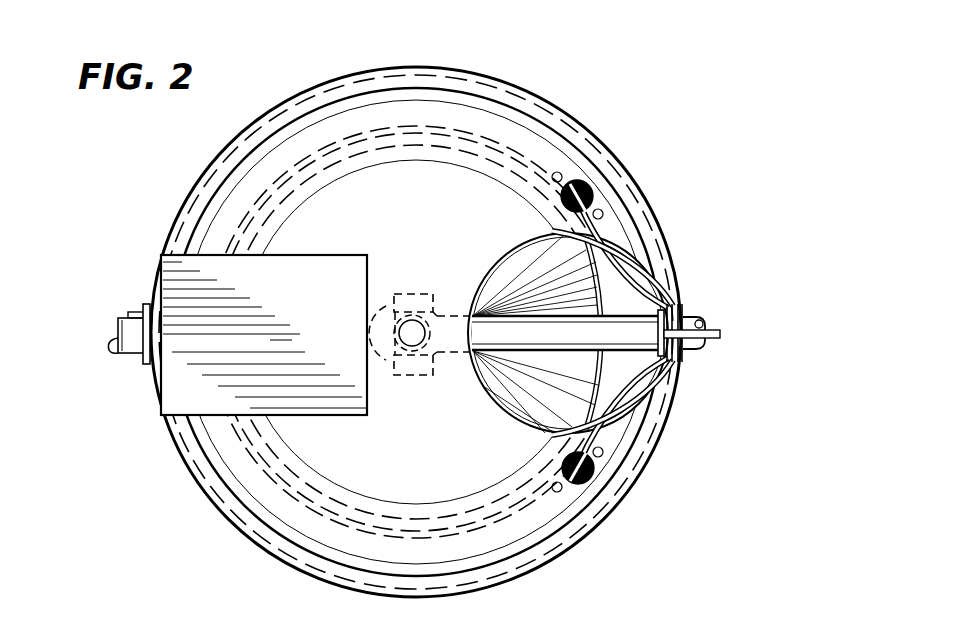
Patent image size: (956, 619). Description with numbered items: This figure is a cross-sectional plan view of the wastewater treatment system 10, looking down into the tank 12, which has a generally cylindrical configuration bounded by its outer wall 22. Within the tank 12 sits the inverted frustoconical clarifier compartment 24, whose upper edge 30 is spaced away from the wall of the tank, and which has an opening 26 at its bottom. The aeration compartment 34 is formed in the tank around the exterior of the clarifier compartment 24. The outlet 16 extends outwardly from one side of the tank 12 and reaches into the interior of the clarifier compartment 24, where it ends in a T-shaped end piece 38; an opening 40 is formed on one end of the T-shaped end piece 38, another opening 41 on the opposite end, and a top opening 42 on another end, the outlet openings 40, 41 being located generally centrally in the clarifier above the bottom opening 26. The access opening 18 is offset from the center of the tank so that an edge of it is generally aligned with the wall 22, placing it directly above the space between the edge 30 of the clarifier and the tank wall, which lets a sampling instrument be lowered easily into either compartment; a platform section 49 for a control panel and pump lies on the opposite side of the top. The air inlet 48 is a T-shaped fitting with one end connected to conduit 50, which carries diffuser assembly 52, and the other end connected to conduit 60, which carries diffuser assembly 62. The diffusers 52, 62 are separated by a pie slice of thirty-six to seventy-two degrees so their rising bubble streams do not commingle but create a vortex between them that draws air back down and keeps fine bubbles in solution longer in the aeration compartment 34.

The wastewater treatment system 10 is at (600, 78).
The tank 12 is at (598, 135).
The outer wall 22 is at (368, 82).
The aeration compartment 34 is at (558, 546).
The upper edge 30 is at (497, 149).
The clarifier compartment 24 is at (426, 211).
The platform section 49 is at (272, 348).
The access opening 18 is at (536, 236).
The T-shaped end piece 38 is at (420, 298).
The conduit 60 is at (640, 288).
The conduit 50 is at (640, 385).
The diffuser assembly 62 is at (597, 190).
The diffuser assembly 52 is at (590, 480).
The air inlet 48 is at (692, 355).
The outlet 16 is at (703, 322).
The opening 26 is at (392, 312).
The opening 41 is at (410, 300).
The opening 40 is at (416, 372).
The top opening 42 is at (405, 340).